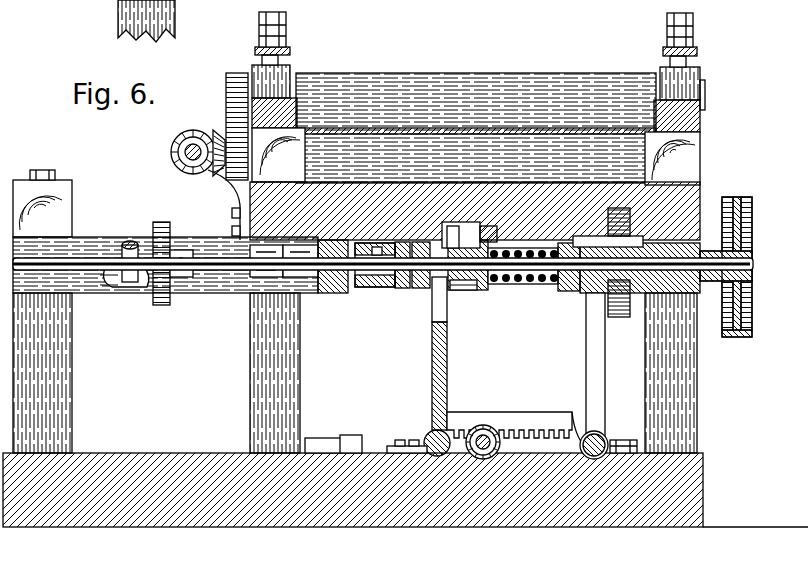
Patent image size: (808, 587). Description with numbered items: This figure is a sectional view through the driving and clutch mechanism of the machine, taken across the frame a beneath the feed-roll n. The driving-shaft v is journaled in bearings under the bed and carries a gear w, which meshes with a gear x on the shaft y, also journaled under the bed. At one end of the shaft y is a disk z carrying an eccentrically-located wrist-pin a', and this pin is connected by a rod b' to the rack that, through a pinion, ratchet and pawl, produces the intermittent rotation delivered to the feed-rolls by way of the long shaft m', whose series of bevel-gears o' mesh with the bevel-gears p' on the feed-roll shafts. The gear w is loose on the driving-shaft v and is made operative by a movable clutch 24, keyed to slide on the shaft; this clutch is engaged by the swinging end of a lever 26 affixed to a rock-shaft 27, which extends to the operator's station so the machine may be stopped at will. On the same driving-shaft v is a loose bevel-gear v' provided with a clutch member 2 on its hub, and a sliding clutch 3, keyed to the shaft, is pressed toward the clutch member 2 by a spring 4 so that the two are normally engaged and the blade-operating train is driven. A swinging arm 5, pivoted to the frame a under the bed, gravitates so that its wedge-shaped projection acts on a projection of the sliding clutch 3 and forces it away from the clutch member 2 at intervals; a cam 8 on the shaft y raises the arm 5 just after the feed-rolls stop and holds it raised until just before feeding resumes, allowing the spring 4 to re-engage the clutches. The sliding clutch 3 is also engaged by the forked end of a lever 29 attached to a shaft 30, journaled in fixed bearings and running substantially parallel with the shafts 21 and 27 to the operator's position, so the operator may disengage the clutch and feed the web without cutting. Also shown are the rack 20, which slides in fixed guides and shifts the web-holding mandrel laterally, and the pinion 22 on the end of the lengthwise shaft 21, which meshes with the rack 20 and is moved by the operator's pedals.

The frame a is at (489, 98).
The feed-roll n is at (450, 90).
The bevel-gear p' is at (226, 126).
The long shaft m' is at (176, 153).
The bevel-gear o' is at (198, 205).
The rod b' is at (126, 249).
The wrist-pin a' is at (124, 299).
The disk z is at (162, 303).
The shaft y is at (230, 268).
The loose bevel-gear v' is at (382, 283).
The clutch member 2 is at (414, 290).
The lever 29 is at (446, 298).
The sliding clutch 3 is at (485, 288).
The spring 4 is at (548, 282).
The gear w is at (564, 292).
The movable clutch 24 is at (575, 282).
The lever 26 is at (597, 339).
The gear x is at (619, 312).
The driving-shaft v is at (726, 267).
The cam 8 is at (445, 236).
The swinging arm 5 is at (486, 226).
The shaft 30 is at (430, 438).
The rack 20 is at (506, 416).
The pinion 22 is at (500, 424).
The shaft 21 is at (505, 444).
The rock-shaft 27 is at (607, 438).